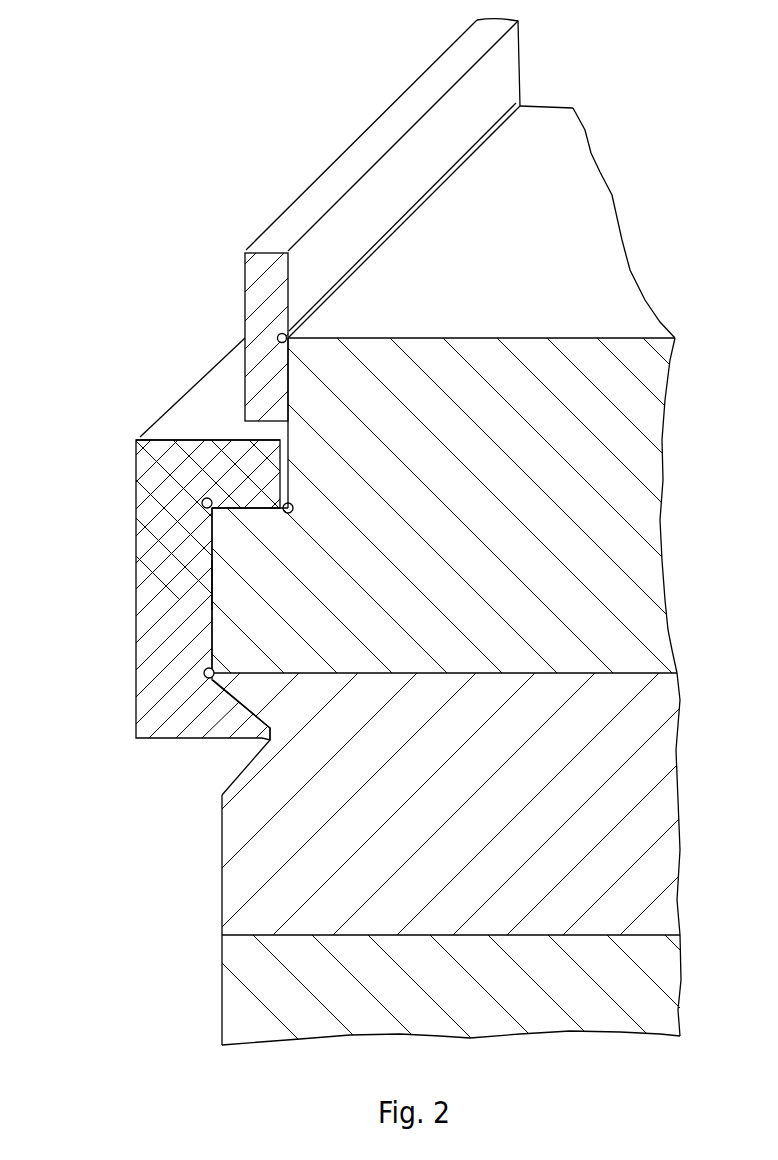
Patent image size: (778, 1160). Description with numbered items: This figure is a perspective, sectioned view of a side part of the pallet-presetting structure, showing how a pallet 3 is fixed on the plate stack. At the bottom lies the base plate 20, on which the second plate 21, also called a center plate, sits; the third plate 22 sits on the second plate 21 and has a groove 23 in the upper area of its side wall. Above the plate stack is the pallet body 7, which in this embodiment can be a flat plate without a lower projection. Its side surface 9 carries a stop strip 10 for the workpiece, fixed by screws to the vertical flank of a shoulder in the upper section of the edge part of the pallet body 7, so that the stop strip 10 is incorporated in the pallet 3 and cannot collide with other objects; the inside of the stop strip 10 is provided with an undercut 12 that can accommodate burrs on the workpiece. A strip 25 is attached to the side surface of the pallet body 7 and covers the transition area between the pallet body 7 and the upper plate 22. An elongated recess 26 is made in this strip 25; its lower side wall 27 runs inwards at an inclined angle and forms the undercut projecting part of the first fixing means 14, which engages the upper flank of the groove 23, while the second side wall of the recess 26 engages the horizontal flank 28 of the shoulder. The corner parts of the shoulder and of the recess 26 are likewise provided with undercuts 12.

The pallet 3 is at (175, 160).
The stop strip 10 is at (262, 278).
The undercut 12 is at (278, 336).
The side surface 9 is at (370, 443).
The first fixing means 14 is at (165, 363).
The pallet body 7 is at (377, 528).
The horizontal flank 28 is at (203, 500).
The third plate 22 is at (252, 568).
The elongated recess 26 is at (210, 583).
The strip 25 is at (167, 612).
The inclined side wall 27 is at (250, 712).
The groove 23 is at (248, 765).
The second plate 21 is at (222, 845).
The base plate 20 is at (222, 972).